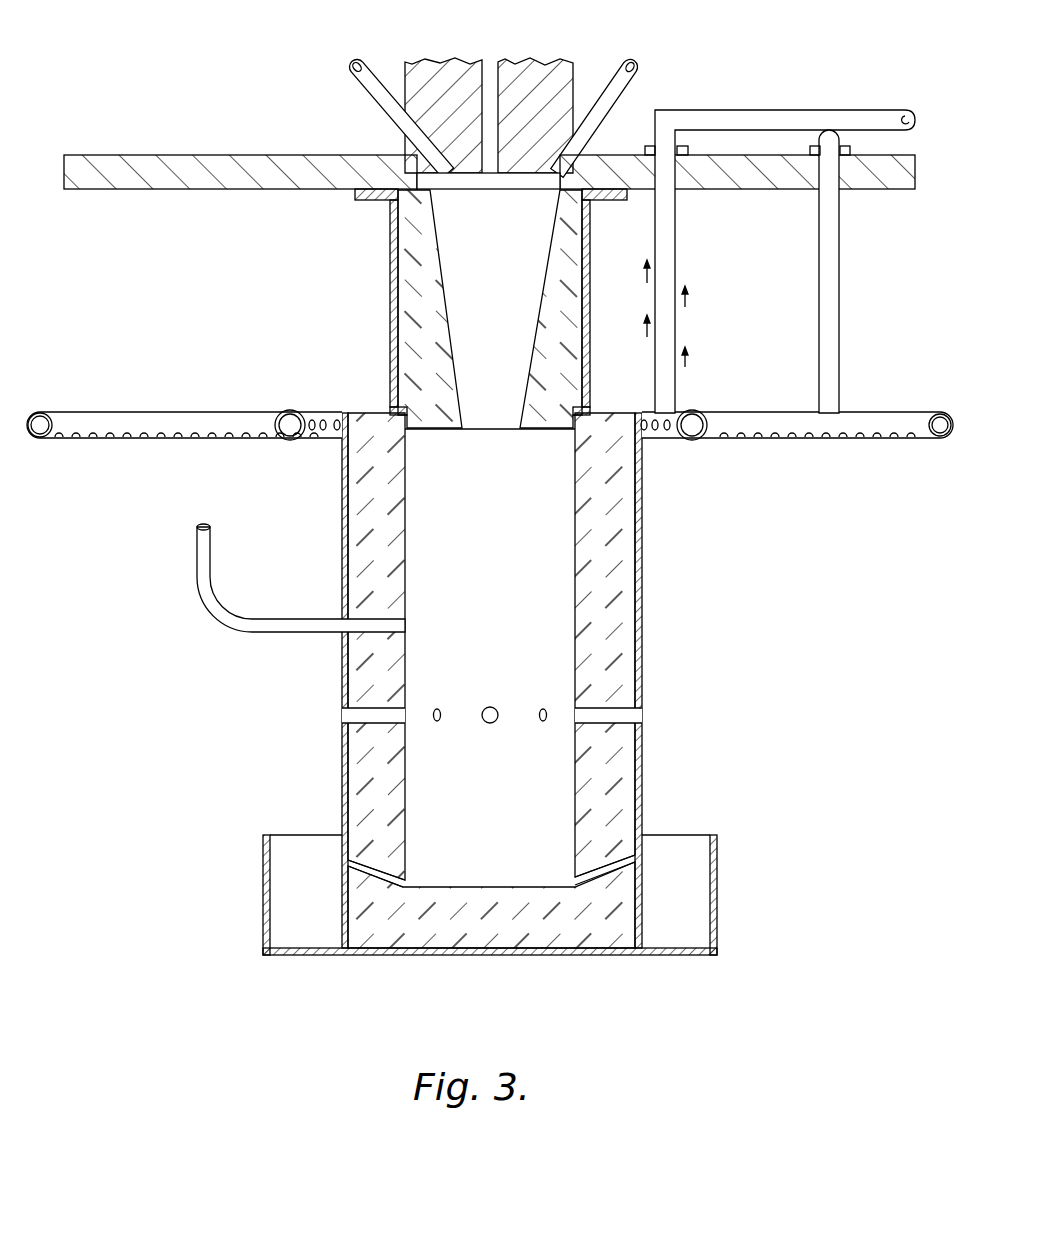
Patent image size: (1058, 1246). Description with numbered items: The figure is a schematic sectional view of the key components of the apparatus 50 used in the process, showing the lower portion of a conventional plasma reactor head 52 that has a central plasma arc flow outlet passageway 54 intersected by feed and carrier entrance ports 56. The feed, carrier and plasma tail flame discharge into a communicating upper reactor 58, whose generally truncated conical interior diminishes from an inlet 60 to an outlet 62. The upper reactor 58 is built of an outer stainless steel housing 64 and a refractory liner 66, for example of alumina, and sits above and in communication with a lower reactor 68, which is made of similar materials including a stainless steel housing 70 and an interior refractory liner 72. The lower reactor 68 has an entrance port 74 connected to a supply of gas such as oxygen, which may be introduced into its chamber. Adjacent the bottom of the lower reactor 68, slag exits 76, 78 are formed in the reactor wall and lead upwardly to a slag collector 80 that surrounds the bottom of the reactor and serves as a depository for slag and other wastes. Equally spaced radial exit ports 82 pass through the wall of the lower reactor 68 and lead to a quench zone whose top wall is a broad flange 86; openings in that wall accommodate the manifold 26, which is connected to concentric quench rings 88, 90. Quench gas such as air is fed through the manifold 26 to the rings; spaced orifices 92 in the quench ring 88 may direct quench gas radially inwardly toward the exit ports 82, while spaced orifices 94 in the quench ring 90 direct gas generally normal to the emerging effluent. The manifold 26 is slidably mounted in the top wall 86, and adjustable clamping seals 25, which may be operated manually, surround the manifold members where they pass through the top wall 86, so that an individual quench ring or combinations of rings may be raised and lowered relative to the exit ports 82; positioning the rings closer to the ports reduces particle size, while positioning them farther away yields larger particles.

The adjustable clamping seals 25 is at (690, 147).
The manifold 26 is at (750, 117).
The reactor 50 is at (291, 299).
The plasma reactor head 52 is at (583, 137).
The central plasma arc flow outlet passageway 54 is at (492, 68).
The feed and carrier entrance ports 56 is at (379, 102).
The upper reactor 58 is at (598, 224).
The inlet 60 is at (437, 192).
The outlet 62 is at (470, 429).
The outer stainless steel housing 64 is at (592, 293).
The refractory liner 66 is at (444, 291).
The lower reactor 68 is at (555, 680).
The stainless steel housing 70 is at (645, 650).
The interior refractory liner 72 is at (405, 827).
The entrance port 74 is at (405, 626).
The slag exit 76 is at (420, 884).
The slag exit 78 is at (575, 883).
The slag collector 80 is at (700, 903).
The radial exit ports 82 is at (645, 716).
The broad flange 86 is at (852, 190).
The quench ring 88 is at (648, 414).
The quench ring 90 is at (490, 421).
The spaced orifices 92 is at (655, 432).
The spaced orifices 94 is at (897, 439).